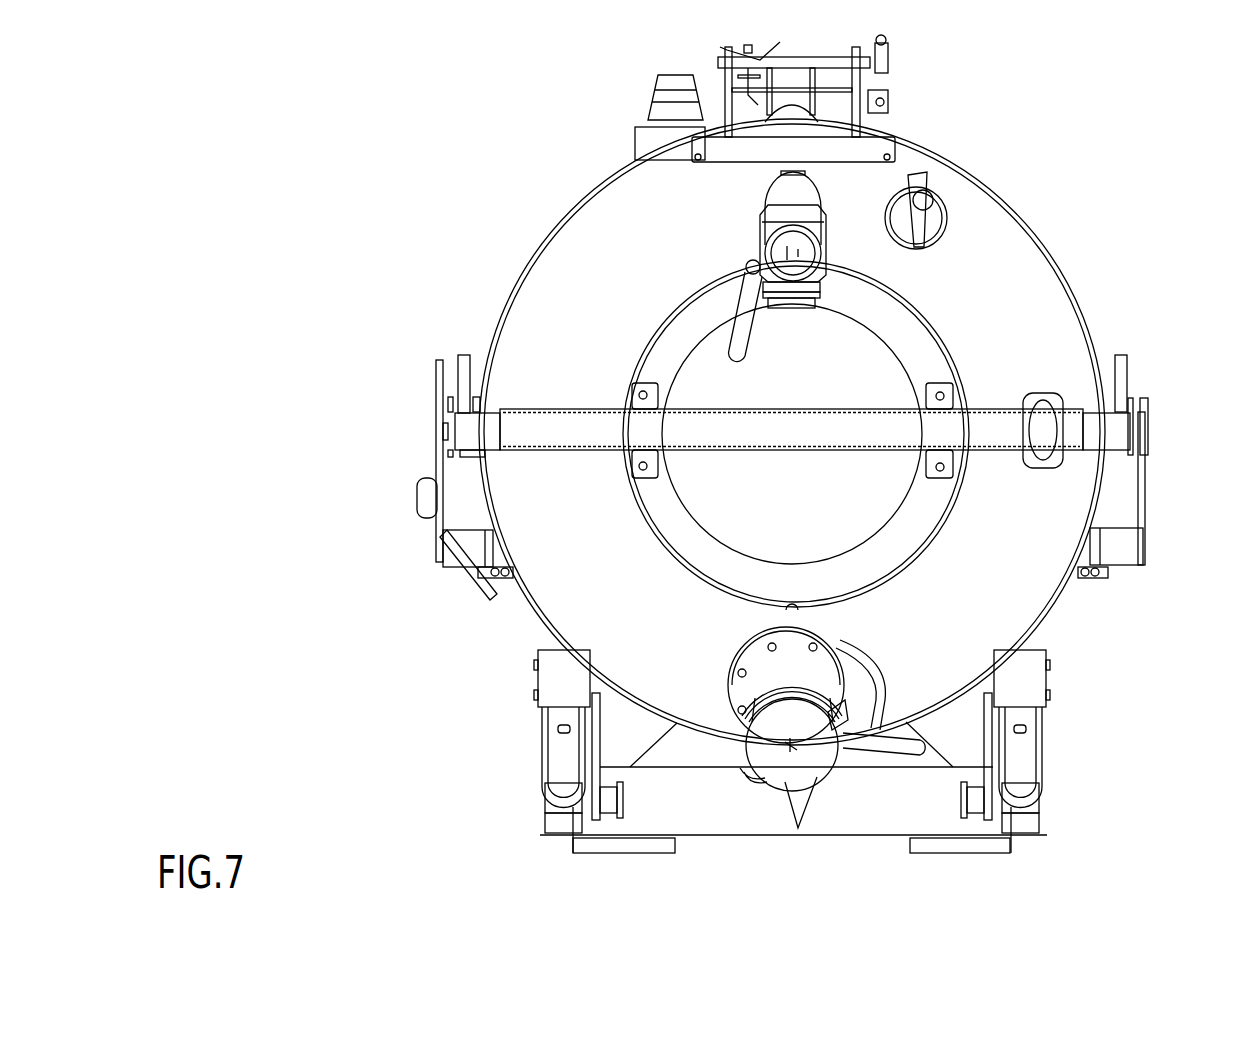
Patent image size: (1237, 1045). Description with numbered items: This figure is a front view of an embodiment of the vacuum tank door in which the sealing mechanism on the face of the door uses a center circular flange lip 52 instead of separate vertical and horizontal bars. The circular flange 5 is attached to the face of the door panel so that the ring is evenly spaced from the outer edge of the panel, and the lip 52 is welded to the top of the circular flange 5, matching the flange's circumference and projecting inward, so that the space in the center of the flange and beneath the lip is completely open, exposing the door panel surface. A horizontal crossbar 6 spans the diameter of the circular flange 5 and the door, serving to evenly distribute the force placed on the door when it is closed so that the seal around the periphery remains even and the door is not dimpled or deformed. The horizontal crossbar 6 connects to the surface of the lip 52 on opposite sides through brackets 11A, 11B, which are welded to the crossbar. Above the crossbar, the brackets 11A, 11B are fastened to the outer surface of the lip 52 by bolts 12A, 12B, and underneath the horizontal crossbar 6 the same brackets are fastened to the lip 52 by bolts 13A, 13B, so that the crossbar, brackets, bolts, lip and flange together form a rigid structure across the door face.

The circular flange 5 is at (812, 424).
The horizontal crossbar 6 is at (836, 401).
The bracket 11A is at (1064, 351).
The bracket 11B is at (495, 494).
The bolt 12A is at (1064, 301).
The bolt 12B is at (541, 301).
The bolt 13A is at (1062, 551).
The bolt 13B is at (494, 539).
The center circular flange lip 52 is at (695, 470).